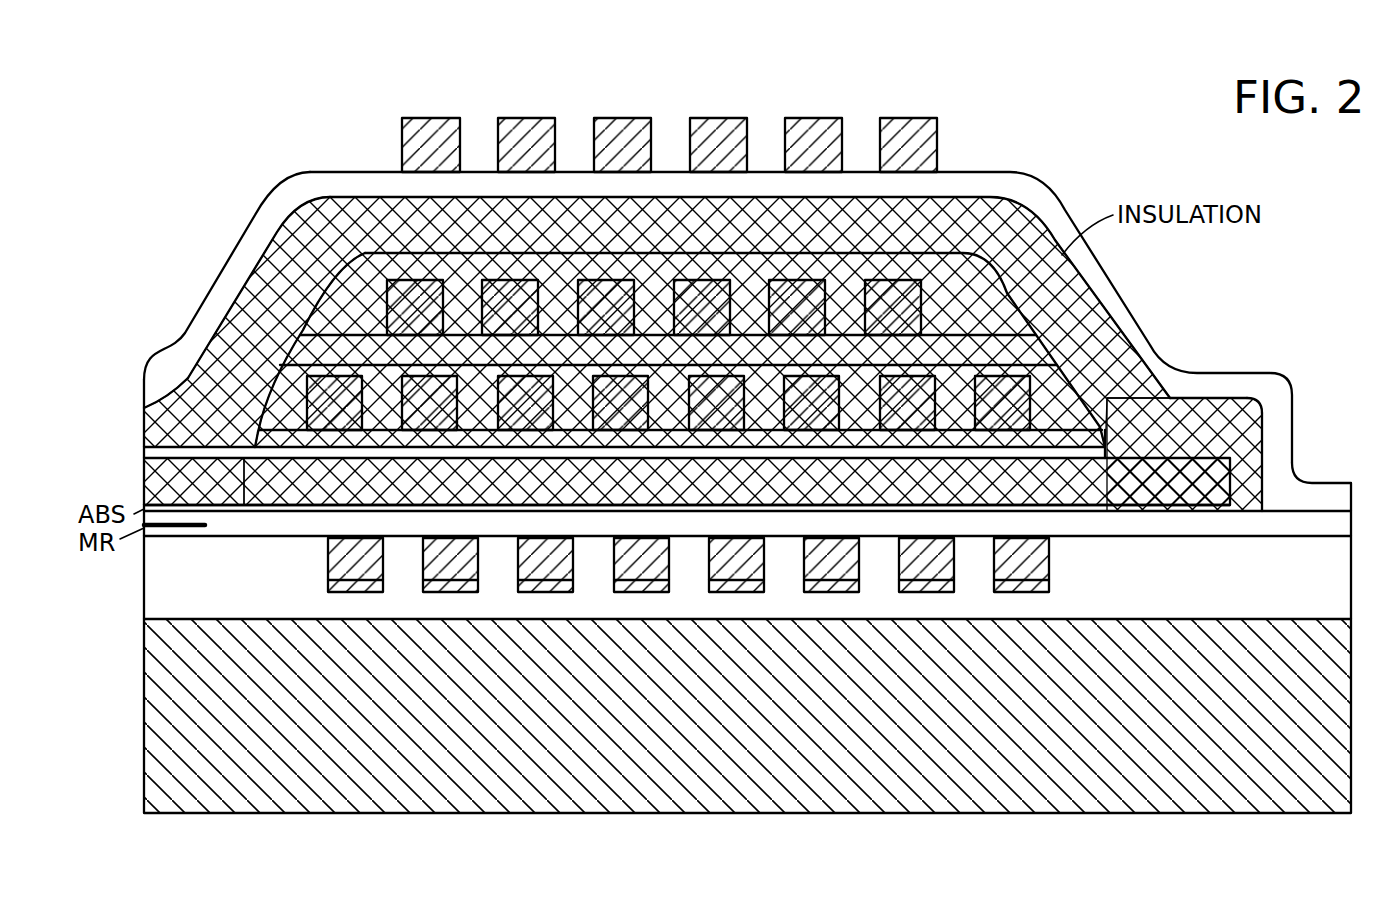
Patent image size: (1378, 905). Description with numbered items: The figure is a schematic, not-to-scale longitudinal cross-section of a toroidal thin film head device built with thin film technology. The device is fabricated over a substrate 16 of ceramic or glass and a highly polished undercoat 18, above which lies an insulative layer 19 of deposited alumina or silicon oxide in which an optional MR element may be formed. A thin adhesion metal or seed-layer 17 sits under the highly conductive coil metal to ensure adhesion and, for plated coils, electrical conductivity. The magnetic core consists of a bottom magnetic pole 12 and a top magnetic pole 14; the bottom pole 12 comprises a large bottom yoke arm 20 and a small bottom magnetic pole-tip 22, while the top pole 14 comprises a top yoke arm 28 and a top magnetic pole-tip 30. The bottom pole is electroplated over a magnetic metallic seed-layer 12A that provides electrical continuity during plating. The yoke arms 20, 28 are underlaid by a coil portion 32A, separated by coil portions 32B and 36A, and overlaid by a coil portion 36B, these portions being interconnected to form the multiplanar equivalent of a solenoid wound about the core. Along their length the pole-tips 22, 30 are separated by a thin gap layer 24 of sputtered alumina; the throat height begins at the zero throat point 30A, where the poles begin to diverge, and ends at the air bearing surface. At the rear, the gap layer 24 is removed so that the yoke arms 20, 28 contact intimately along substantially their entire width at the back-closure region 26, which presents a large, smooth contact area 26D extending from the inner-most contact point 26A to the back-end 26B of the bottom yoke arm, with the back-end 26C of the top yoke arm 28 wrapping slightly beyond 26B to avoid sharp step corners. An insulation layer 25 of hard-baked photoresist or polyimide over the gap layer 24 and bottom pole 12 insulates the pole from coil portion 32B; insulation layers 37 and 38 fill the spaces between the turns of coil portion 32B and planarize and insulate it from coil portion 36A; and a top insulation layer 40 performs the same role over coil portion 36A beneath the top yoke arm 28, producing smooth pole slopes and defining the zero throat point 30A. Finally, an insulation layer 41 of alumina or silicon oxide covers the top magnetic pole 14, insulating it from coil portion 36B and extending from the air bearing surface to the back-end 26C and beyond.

The bottom magnetic pole 12 is at (593, 493).
The magnetic metallic seed-layer 12A is at (1232, 503).
The top magnetic pole 14 is at (588, 217).
The substrate 16 is at (901, 735).
The adhesion metal (seed-layer) 17 is at (452, 592).
The undercoat 18 is at (1187, 589).
The insulative layer 19 is at (1272, 523).
The bottom yoke arm 20 is at (635, 493).
The bottom magnetic pole-tip 22 is at (160, 502).
The gap layer 24 is at (144, 448).
The insulation layer 25 is at (207, 398).
The back-closure region 26 is at (1166, 443).
The inner-most point of contact (front edge of back-closure region) 26A is at (1105, 457).
The back-end of bottom yoke arm 26B is at (1265, 415).
The back-end of top yoke arm 26C is at (1263, 453).
The contact area 26D is at (1198, 452).
The top yoke arm 28 is at (655, 243).
The top magnetic pole-tip 30 is at (160, 436).
The zero throat point 30A is at (258, 432).
The coil portion 32A is at (358, 568).
The coil portion 32B is at (333, 423).
The coil portion 36A is at (907, 287).
The coil portion 36B is at (810, 125).
The insulation layer 37 is at (247, 342).
The insulation layer 38 is at (307, 347).
The top insulation layer 40 is at (265, 208).
The insulation layer 41 is at (307, 187).